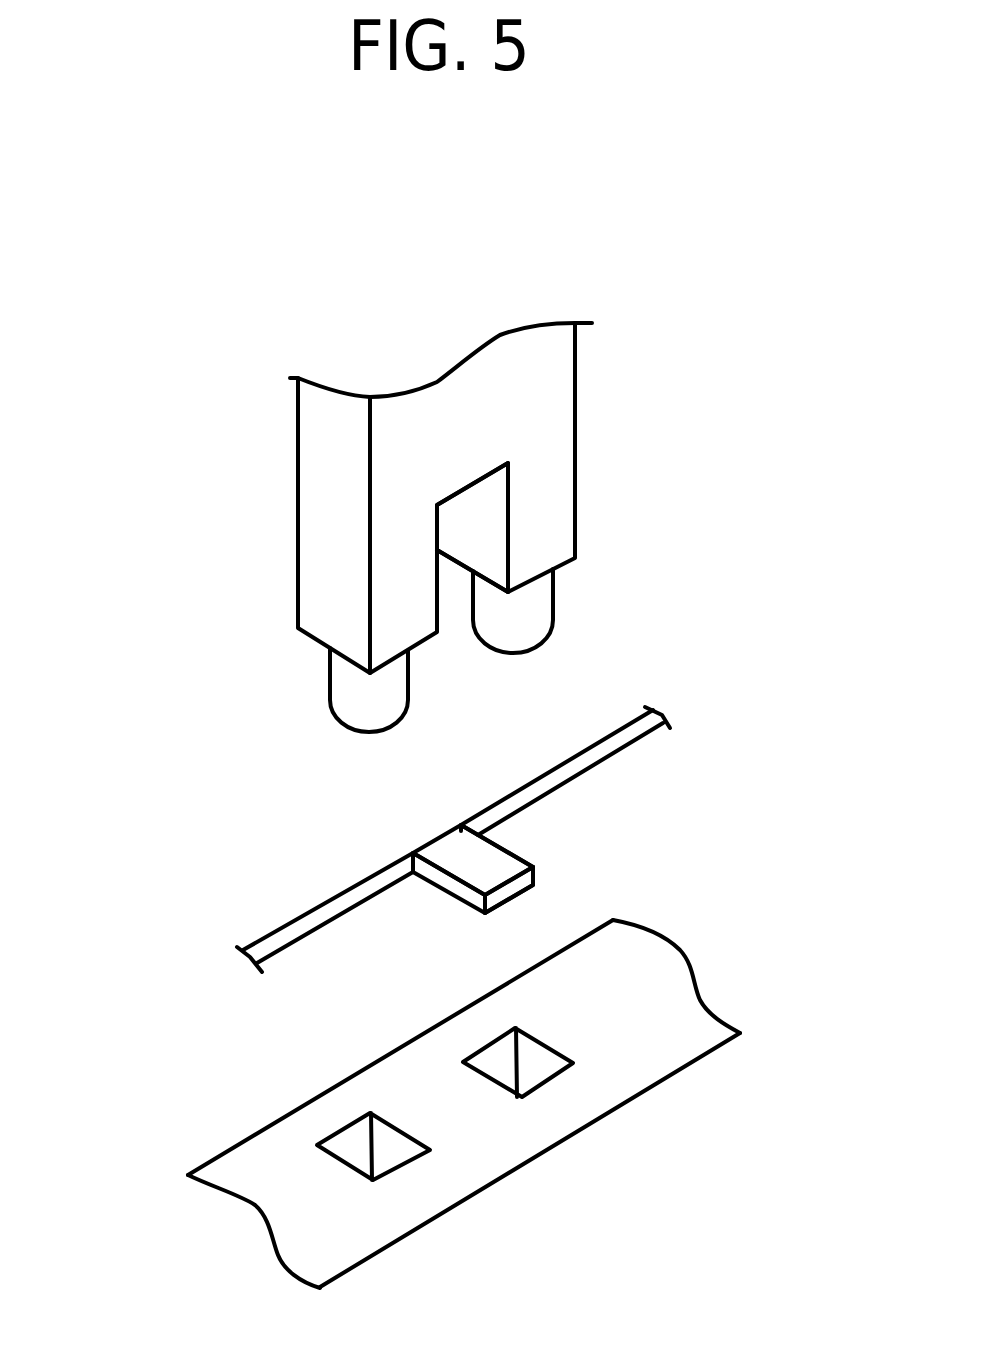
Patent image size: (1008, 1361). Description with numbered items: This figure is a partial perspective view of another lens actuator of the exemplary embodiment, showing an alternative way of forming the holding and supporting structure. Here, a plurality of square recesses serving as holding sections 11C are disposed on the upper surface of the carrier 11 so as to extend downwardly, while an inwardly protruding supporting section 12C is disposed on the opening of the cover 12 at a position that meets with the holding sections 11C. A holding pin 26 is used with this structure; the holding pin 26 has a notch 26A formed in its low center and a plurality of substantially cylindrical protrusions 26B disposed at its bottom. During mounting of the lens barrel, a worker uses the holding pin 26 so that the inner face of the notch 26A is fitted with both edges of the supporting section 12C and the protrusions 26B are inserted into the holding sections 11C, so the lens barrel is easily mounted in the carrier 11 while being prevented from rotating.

The carrier 11 is at (283, 1155).
The holding sections 11C is at (387, 1157).
The cover 12 is at (287, 850).
The supporting section 12C is at (492, 863).
The holding pin 26 is at (322, 487).
The notch 26A is at (472, 518).
The protrusions 26B is at (383, 712).